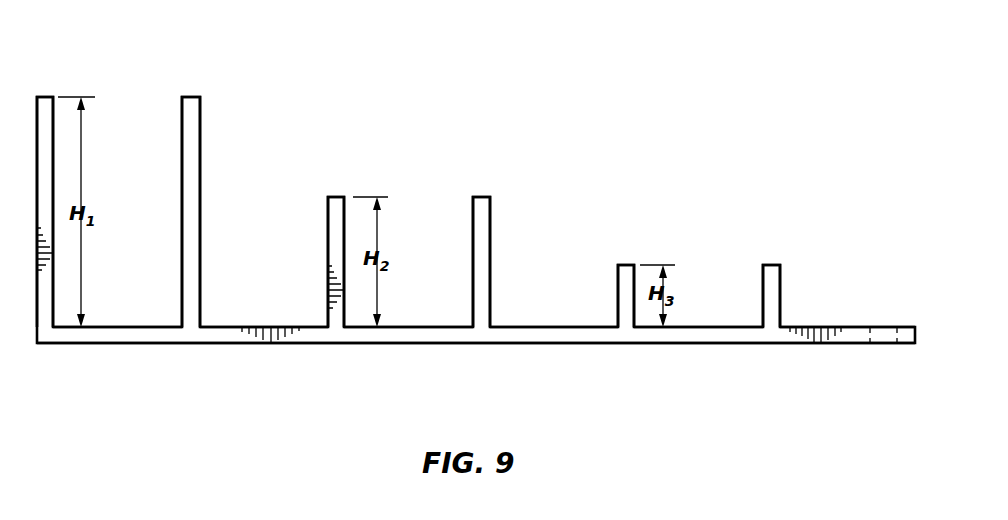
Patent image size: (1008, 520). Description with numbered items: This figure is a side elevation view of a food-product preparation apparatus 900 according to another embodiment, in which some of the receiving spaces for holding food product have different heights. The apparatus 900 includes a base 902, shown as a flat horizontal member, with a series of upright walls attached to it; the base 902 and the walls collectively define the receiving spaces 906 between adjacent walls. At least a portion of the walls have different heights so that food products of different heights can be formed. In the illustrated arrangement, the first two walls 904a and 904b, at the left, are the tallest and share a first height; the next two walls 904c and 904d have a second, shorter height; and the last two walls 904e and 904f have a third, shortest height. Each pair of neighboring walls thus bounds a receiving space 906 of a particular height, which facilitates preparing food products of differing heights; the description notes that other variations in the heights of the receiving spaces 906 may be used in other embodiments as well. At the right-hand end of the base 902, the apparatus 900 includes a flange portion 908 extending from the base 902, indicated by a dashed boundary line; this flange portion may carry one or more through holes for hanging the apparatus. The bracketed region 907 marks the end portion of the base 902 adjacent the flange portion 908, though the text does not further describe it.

The food-product preparation apparatus 900 is at (698, 114).
The base 902 is at (430, 335).
The wall 904a is at (45, 108).
The wall 904b is at (193, 107).
The wall 904c is at (337, 205).
The wall 904d is at (485, 206).
The wall 904e is at (627, 268).
The wall 904f is at (777, 268).
The receiving spaces 906 is at (153, 223).
The end region of base 907 is at (915, 354).
The flange portion 908 is at (882, 327).